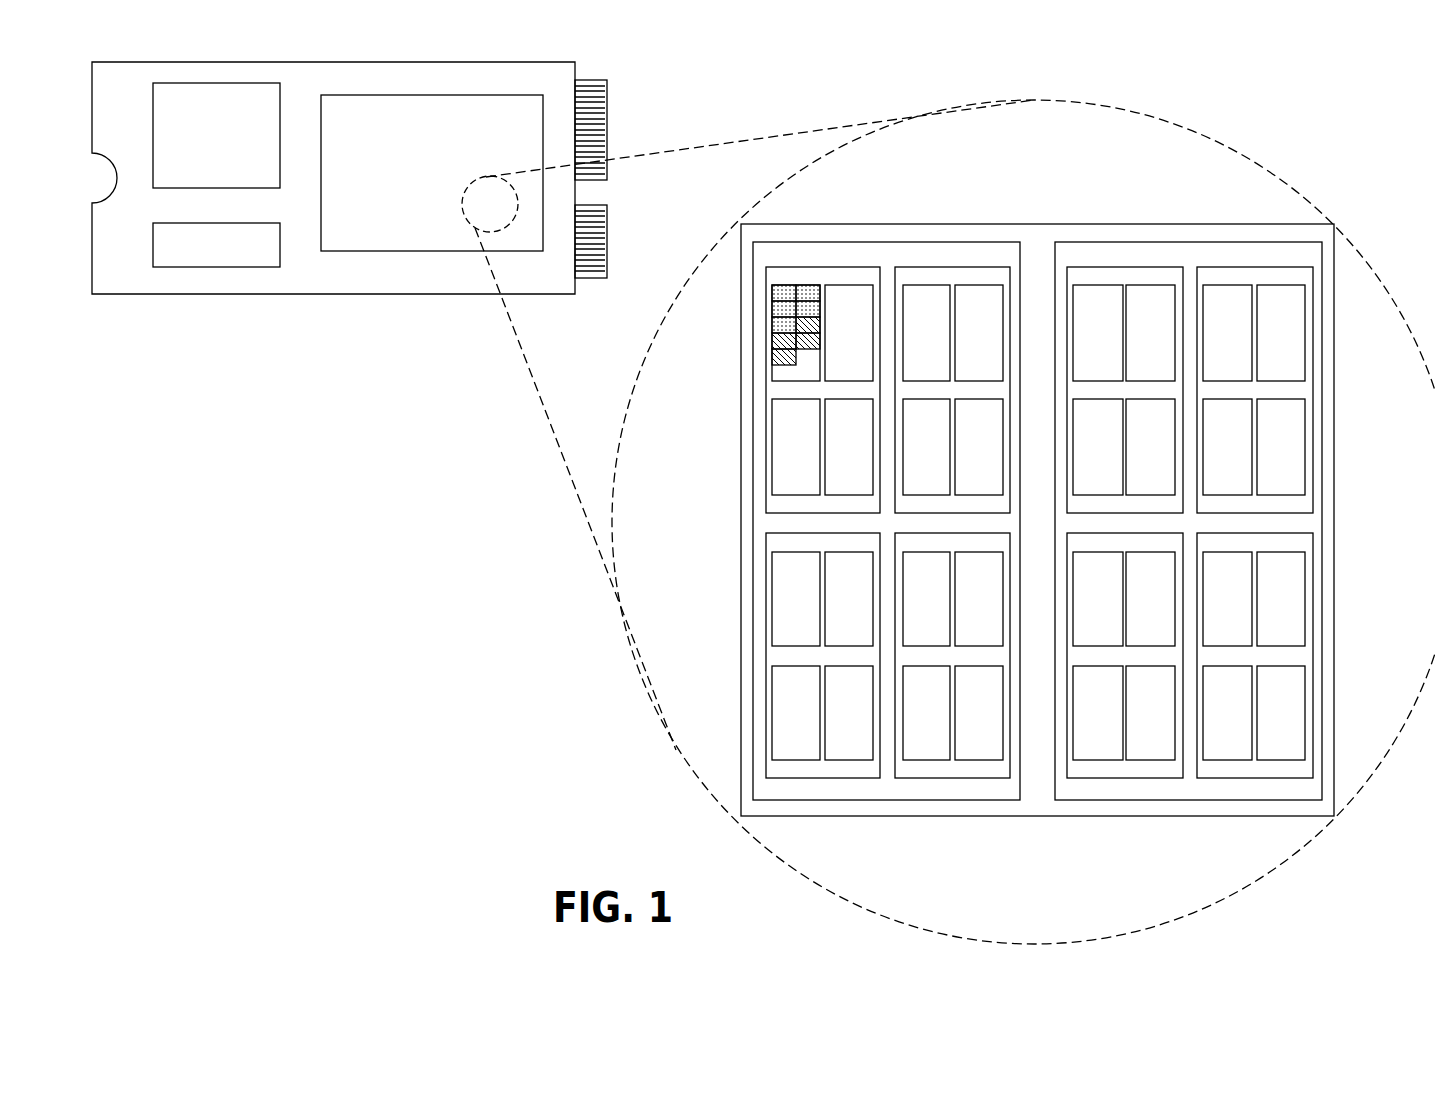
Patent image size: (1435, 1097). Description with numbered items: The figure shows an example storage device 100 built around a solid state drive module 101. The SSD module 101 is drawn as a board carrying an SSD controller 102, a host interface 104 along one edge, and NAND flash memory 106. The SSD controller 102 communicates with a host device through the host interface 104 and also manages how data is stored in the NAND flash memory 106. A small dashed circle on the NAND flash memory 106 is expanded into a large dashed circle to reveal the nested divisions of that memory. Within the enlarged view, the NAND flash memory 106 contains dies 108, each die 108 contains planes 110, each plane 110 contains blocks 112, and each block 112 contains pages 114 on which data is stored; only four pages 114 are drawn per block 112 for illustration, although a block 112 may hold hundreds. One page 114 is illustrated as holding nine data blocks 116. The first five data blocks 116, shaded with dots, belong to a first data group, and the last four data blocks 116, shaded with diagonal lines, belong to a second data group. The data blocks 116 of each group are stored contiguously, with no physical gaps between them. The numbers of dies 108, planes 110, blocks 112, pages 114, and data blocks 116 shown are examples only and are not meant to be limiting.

The storage device 100 is at (713, 435).
The solid state drive module 101 is at (362, 295).
The SSD controller 102 is at (216, 135).
The host interface 104 is at (610, 80).
The NAND flash memory 106 is at (827, 455).
The die 108 is at (740, 610).
The plane 110 is at (753, 517).
The block 112 is at (767, 449).
The page 114 is at (793, 305).
The data blocks 116 is at (793, 272).